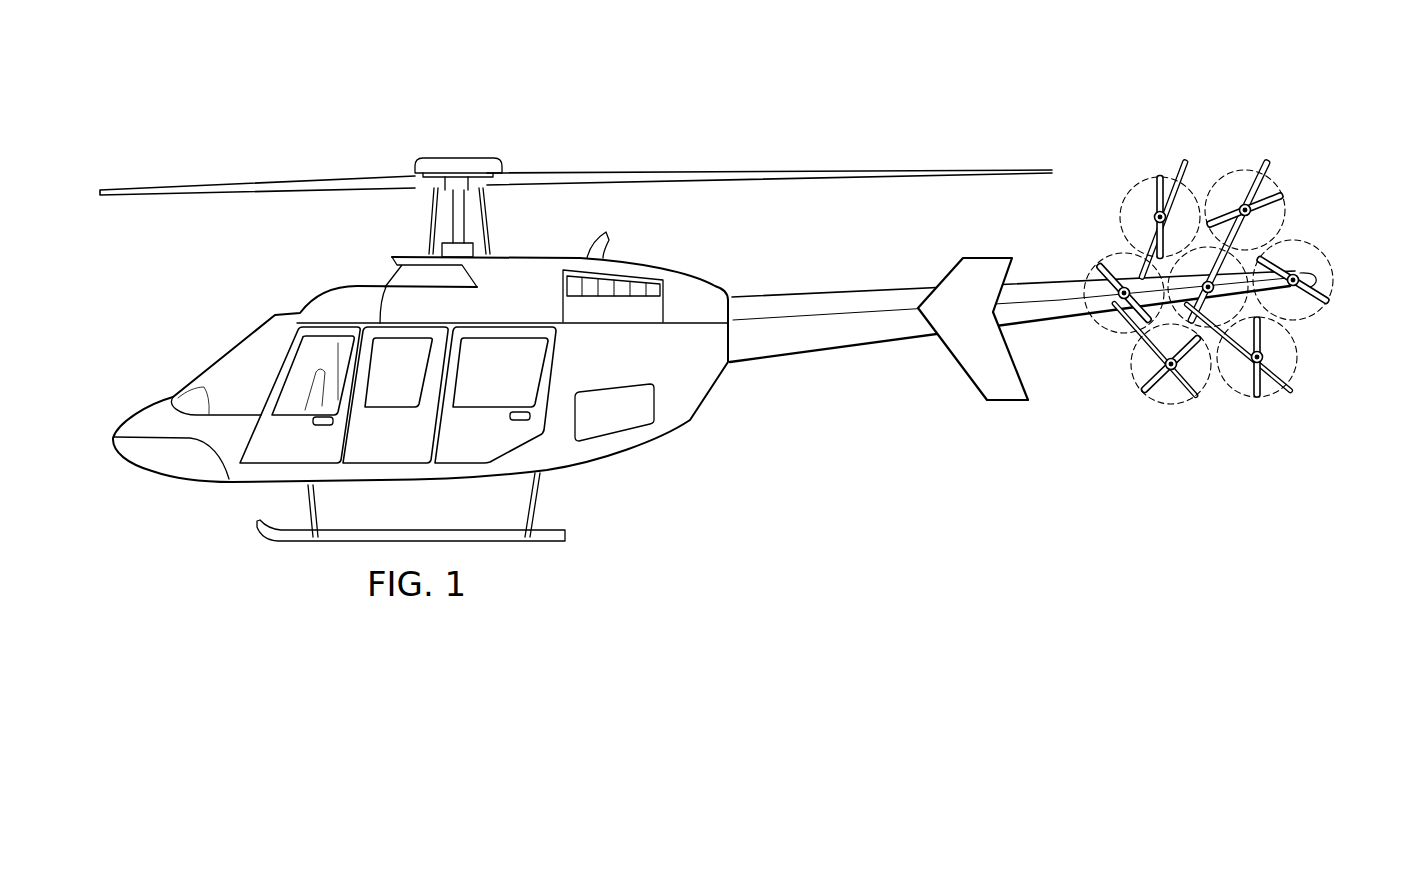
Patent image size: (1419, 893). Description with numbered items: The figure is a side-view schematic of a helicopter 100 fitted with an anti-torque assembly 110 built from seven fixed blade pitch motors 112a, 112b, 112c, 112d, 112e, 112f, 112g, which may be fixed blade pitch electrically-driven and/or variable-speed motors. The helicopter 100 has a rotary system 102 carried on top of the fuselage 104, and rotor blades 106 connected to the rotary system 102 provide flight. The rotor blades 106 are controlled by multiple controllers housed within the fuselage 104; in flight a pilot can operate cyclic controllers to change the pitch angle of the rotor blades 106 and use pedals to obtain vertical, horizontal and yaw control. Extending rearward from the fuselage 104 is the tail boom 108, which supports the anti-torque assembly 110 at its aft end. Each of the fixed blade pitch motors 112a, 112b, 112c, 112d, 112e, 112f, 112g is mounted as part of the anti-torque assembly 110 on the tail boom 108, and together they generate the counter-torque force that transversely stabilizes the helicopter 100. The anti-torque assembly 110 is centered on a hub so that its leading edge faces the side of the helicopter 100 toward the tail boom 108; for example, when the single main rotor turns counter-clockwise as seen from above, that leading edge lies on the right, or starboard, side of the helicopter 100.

The helicopter 100 is at (286, 108).
The rotary system 102 is at (452, 158).
The fuselage 104 is at (170, 480).
The rotor blades 106 is at (768, 172).
The tail boom 108 is at (835, 350).
The anti-torque assembly 110 is at (1216, 438).
The fixed blade pitch motor 112a is at (1275, 184).
The fixed blade pitch motor 112b is at (1330, 296).
The fixed blade pitch motor 112c is at (1265, 400).
The fixed blade pitch motor 112d is at (1195, 253).
The fixed blade pitch motor 112e is at (1148, 398).
The fixed blade pitch motor 112f is at (1107, 257).
The fixed blade pitch motor 112g is at (1150, 178).